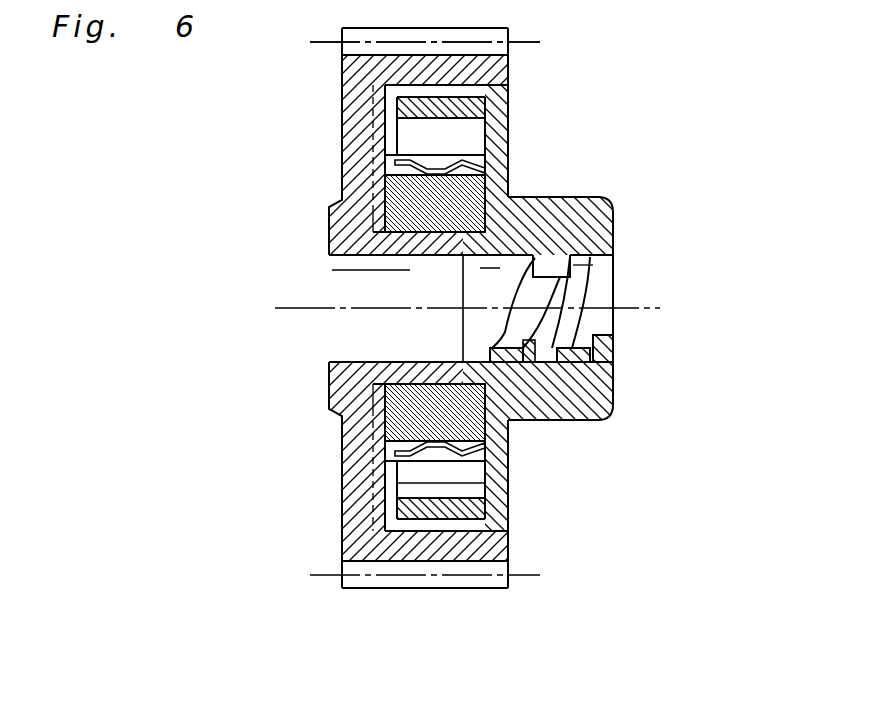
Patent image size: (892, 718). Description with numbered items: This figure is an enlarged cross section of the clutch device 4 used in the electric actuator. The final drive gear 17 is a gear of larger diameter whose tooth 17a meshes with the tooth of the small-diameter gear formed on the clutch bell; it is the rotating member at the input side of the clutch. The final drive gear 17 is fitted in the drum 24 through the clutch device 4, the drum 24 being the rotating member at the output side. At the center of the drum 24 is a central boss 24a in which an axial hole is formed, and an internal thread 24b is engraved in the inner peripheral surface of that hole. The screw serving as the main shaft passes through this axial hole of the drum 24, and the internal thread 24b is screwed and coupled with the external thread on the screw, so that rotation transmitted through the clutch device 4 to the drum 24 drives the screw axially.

The clutch device 4 is at (620, 306).
The final drive gear 17 is at (352, 503).
The tooth 17a is at (427, 580).
The drum 24 is at (498, 483).
The central boss 24a is at (603, 422).
The internal thread 24b is at (558, 322).